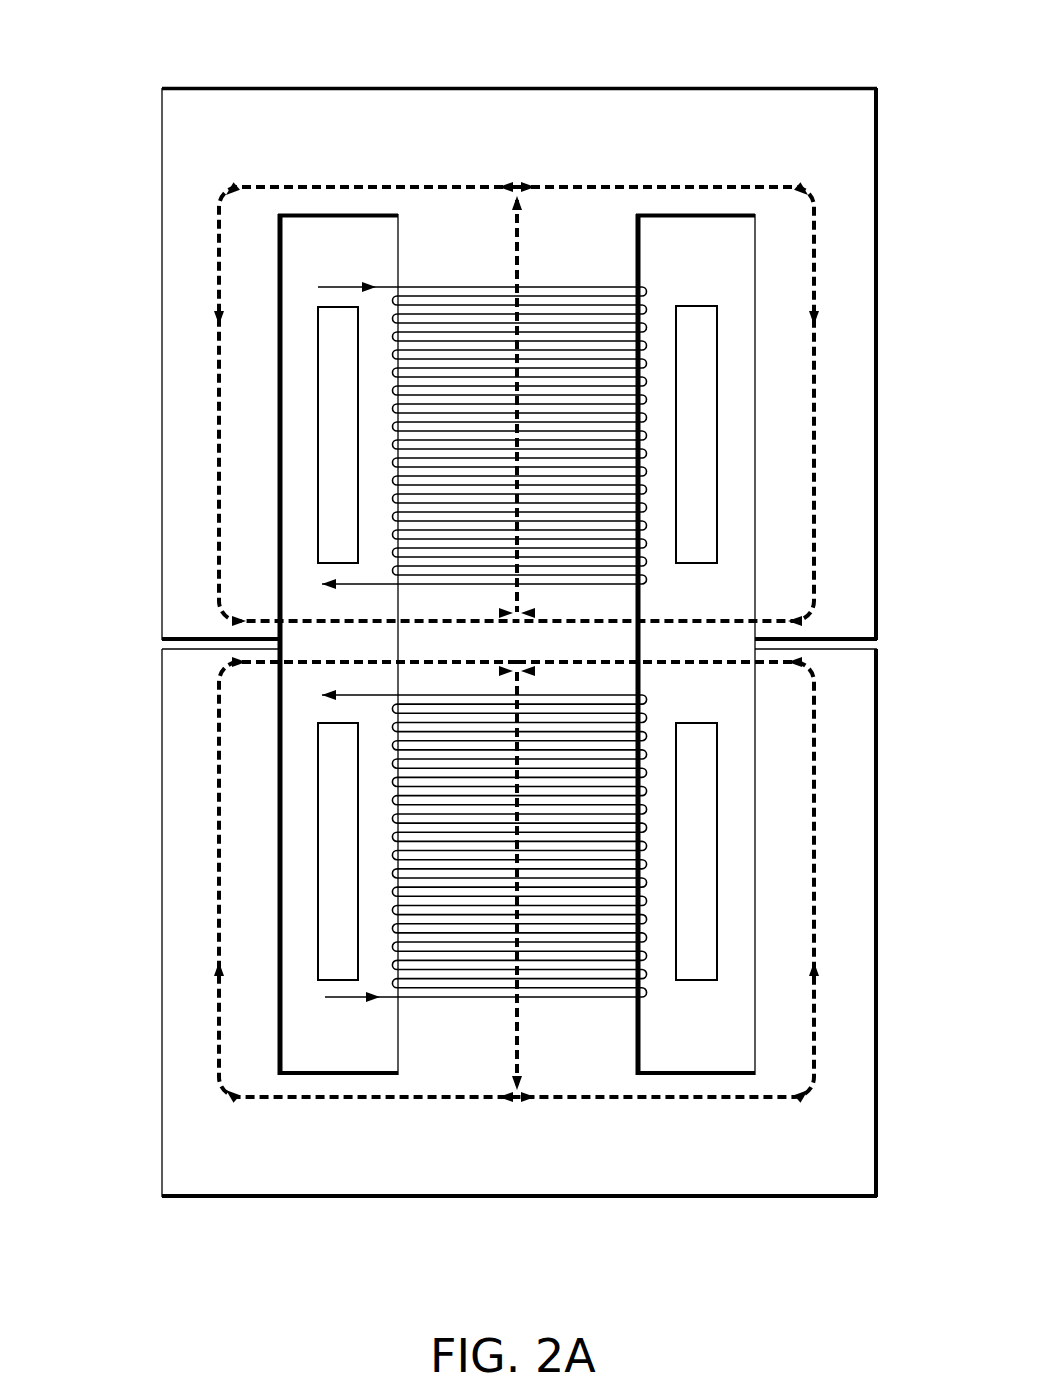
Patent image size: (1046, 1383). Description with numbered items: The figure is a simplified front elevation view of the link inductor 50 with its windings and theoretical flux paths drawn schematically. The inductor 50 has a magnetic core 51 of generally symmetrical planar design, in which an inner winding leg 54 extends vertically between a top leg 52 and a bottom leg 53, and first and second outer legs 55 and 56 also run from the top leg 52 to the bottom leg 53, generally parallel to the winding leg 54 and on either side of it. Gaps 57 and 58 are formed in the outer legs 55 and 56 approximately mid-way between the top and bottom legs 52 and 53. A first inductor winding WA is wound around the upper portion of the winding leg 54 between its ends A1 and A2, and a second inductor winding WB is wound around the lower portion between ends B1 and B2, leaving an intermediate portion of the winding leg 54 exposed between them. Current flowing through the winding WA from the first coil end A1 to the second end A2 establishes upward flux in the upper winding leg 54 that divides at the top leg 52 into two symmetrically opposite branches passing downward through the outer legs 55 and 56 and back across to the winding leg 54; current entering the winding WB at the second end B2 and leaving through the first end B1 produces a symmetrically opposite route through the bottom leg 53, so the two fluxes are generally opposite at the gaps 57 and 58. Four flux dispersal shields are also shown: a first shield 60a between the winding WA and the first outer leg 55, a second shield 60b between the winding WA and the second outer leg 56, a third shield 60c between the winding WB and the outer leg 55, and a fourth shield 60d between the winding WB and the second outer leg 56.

The link inductor 50 is at (108, 26).
The magnetic core 51 is at (160, 111).
The top leg 52 is at (395, 88).
The bottom leg 53 is at (562, 1199).
The inner winding leg 54 is at (641, 248).
The first outer leg 55 is at (160, 357).
The second outer leg 56 is at (878, 465).
The gap 57 is at (134, 652).
The gap 58 is at (894, 645).
The first flux dispersal shield 60a is at (318, 428).
The second shield 60b is at (717, 385).
The third shield 60c is at (318, 859).
The fourth shield 60d is at (717, 851).
The first coil end A1 is at (364, 281).
The second end A2 is at (339, 586).
The first end B1 is at (356, 695).
The second end B2 is at (339, 999).
The first inductor winding WA is at (660, 588).
The second inductor winding WB is at (422, 1010).